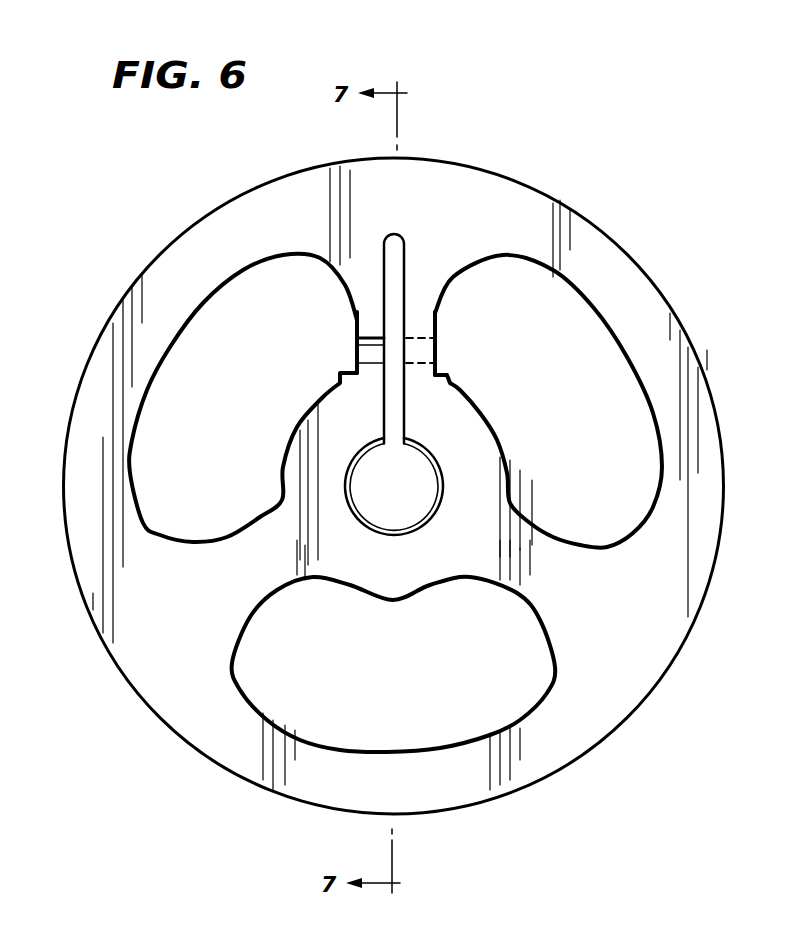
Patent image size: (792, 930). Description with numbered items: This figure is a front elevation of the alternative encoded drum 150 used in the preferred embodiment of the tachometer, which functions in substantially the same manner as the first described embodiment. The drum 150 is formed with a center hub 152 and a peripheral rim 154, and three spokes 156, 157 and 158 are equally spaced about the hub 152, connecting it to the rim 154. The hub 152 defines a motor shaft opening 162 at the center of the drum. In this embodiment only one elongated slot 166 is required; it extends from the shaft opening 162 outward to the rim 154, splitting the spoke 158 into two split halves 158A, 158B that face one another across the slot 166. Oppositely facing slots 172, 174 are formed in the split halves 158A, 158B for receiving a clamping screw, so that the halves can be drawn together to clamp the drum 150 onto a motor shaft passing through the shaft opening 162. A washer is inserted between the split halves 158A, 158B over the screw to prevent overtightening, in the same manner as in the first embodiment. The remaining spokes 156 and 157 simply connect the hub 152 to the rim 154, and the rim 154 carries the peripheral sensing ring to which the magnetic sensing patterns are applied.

The encoded drum 150 is at (694, 262).
The hub 152 is at (488, 467).
The rim 154 is at (492, 187).
The spoke 156 is at (263, 580).
The spoke 157 is at (560, 561).
The spoke 158 is at (363, 284).
The split half 158A is at (365, 327).
The split half 158B is at (440, 318).
The shaft opening 162 is at (410, 510).
The elongated slot 166 is at (384, 417).
The slot 172 is at (362, 356).
The slot 174 is at (423, 353).